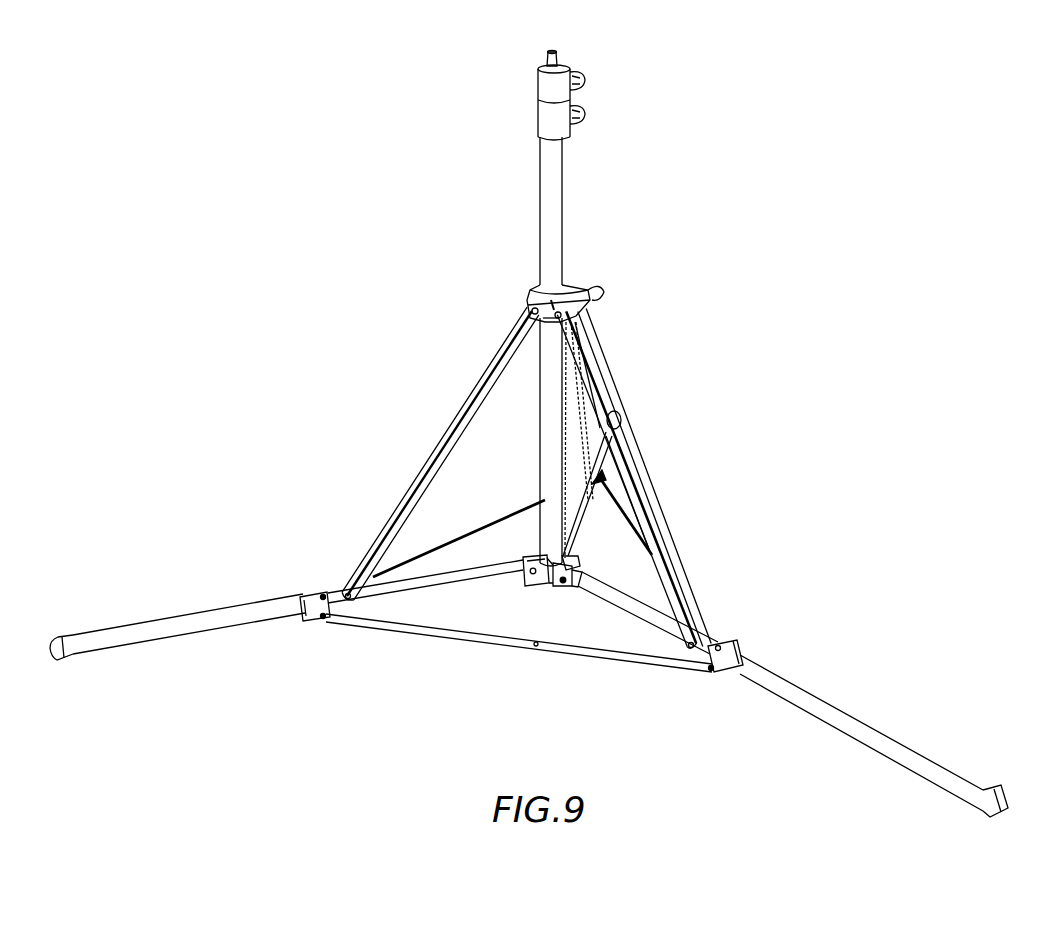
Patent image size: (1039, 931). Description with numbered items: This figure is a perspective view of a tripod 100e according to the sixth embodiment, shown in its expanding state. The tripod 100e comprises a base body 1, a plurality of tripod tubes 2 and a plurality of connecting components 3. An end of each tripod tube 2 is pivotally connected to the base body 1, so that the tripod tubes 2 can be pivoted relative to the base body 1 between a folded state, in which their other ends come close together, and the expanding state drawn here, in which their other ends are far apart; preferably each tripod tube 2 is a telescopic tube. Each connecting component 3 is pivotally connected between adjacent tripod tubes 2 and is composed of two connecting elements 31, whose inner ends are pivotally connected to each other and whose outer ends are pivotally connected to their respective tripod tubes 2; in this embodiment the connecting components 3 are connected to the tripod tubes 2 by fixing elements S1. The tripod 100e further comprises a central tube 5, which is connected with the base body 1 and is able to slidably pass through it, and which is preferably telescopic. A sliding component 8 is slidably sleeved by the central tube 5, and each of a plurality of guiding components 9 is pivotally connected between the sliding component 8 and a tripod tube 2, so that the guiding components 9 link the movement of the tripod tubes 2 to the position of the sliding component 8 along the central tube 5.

The tripod 100e is at (807, 122).
The central tube 5 is at (554, 194).
The sliding component 8 is at (527, 292).
The guiding component 9 is at (468, 402).
The tripod tube 2 is at (199, 619).
The fixing element S1 is at (721, 646).
The base body 1 is at (547, 588).
The connecting element 31 is at (462, 634).
The connecting component 3 is at (428, 723).